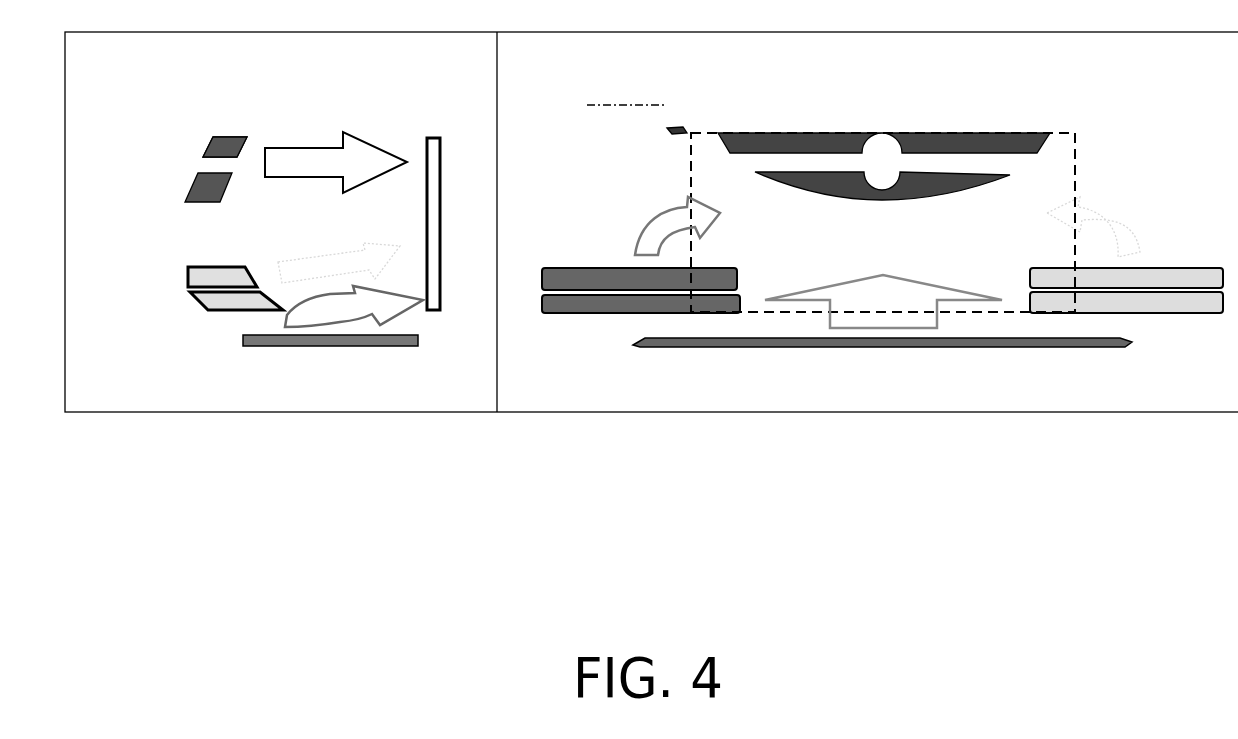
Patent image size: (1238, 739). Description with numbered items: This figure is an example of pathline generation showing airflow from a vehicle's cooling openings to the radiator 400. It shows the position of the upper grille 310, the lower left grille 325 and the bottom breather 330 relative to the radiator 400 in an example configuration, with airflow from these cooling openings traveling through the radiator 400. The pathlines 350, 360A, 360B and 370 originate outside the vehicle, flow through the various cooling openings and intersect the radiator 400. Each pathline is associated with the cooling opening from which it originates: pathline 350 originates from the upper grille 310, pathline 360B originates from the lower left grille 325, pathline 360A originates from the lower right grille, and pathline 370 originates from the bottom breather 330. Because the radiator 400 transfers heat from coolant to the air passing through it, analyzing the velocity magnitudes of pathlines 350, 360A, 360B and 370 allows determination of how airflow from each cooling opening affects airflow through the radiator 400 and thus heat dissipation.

The upper grille 310 is at (904, 130).
The lower left grille 325 is at (1182, 242).
The bottom breather 330 is at (687, 355).
The pathline 350 is at (318, 152).
The pathline 360A is at (729, 215).
The pathline 360B is at (283, 265).
The pathline 370 is at (392, 318).
The radiator 400 is at (433, 136).